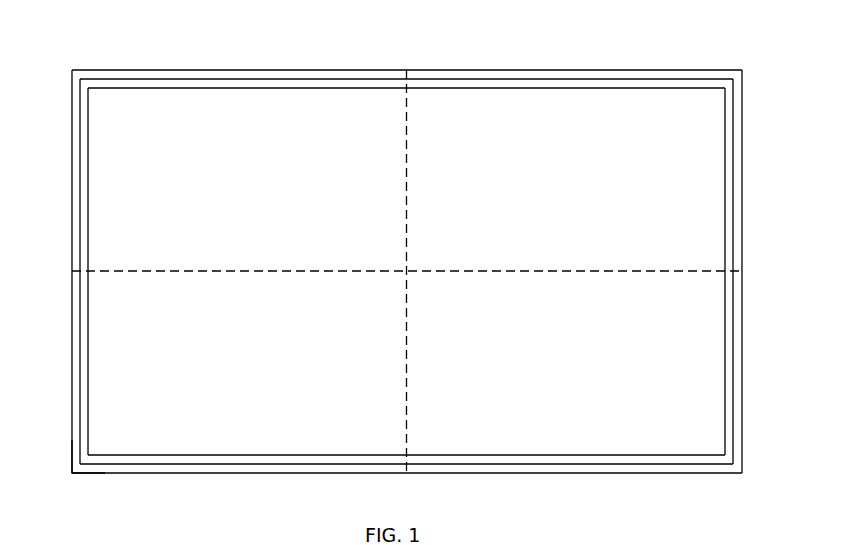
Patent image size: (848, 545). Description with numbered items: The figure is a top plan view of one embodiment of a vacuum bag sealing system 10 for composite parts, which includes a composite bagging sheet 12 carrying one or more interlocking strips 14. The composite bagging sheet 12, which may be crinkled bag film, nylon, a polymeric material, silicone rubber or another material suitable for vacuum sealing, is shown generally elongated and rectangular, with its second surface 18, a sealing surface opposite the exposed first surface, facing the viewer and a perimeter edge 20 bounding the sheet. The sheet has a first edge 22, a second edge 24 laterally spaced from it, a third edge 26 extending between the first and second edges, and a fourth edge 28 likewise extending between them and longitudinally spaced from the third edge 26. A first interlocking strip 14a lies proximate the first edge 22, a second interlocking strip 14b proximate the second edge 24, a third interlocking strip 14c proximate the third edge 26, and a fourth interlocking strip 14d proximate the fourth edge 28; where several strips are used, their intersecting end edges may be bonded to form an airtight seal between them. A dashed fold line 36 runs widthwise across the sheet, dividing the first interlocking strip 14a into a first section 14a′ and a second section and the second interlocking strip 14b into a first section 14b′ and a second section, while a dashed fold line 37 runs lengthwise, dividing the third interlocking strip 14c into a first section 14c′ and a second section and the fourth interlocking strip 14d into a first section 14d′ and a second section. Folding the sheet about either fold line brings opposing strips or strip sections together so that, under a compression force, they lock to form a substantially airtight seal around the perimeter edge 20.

The vacuum bag sealing system 10 is at (88, 63).
The composite bagging sheet 12 is at (72, 370).
The interlocking strip 14 is at (88, 428).
The first interlocking strip 14a is at (558, 79).
The second interlocking strip 14b is at (558, 464).
The third interlocking strip 14c is at (80, 305).
The fourth interlocking strip 14d is at (733, 305).
The first section of the first interlocking strip 14a′ is at (245, 88).
The first section of the second interlocking strip 14b′ is at (243, 455).
The first section of the third interlocking strip 14c′ is at (88, 167).
The first section of the fourth interlocking strip 14d′ is at (724, 170).
The second surface 18 is at (448, 251).
The perimeter edge 20 is at (72, 455).
The first edge 22 is at (493, 70).
The second edge 24 is at (493, 473).
The third edge 26 is at (72, 200).
The fourth edge 28 is at (742, 200).
The fold line 36 is at (407, 350).
The fold line 37 is at (247, 272).